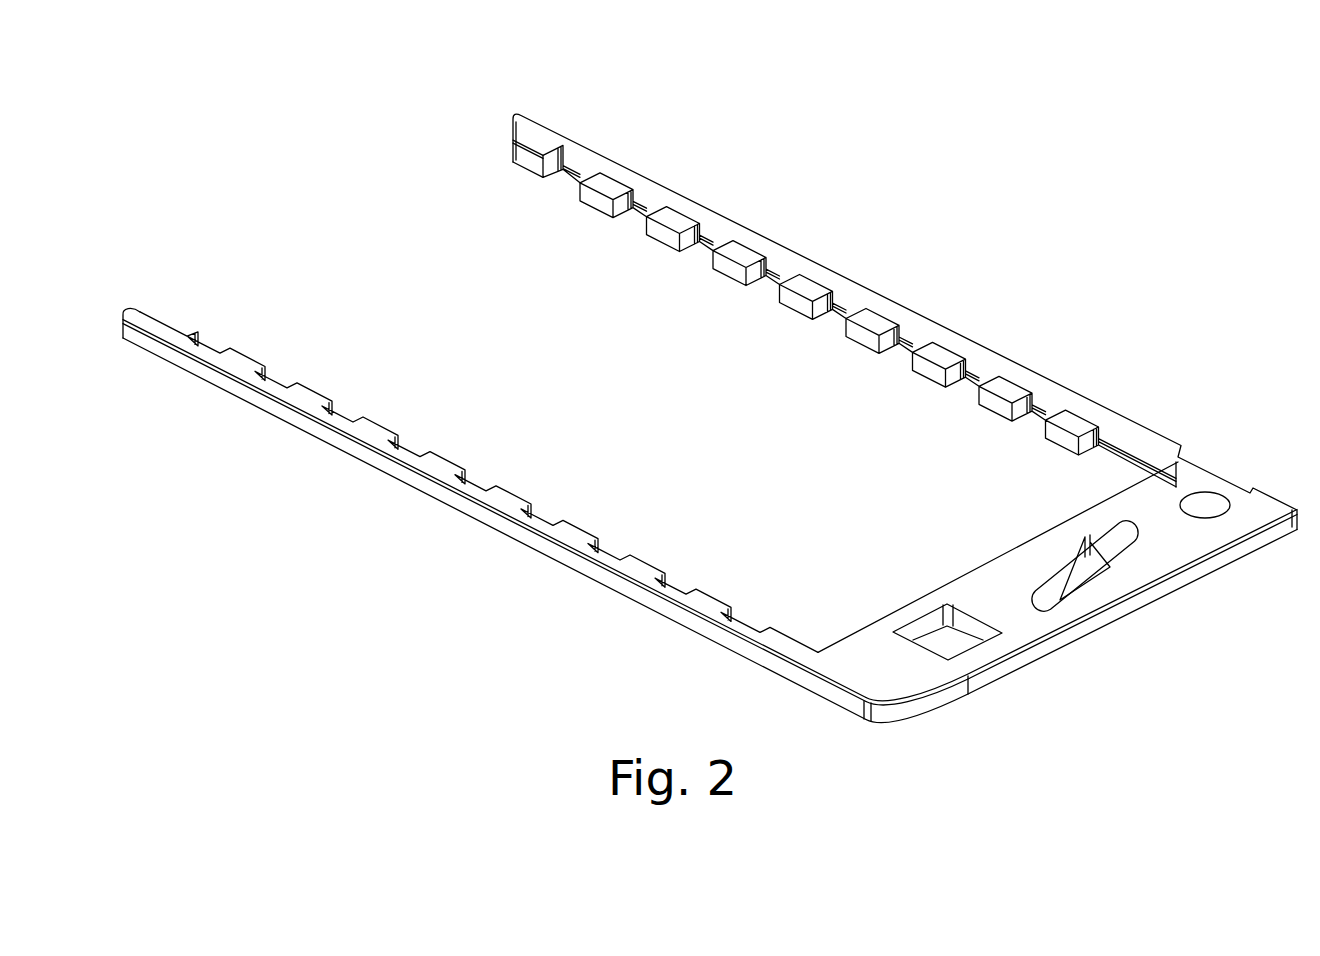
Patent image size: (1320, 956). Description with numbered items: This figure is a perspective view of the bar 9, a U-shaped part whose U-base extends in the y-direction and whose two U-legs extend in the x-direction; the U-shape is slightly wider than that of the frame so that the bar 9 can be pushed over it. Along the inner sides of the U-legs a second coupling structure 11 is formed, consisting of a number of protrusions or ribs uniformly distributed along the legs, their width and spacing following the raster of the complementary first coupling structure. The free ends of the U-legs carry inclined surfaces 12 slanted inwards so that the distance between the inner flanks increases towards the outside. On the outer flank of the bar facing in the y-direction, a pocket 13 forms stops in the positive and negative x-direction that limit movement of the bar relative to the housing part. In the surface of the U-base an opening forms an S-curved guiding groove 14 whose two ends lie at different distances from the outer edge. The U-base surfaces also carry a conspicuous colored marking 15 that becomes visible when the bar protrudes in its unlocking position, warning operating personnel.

The bar 9 is at (1100, 317).
The second coupling structure 11 is at (593, 210).
The inclined surfaces 12 is at (513, 137).
The pocket 13 is at (1217, 478).
The guiding groove 14 is at (1088, 568).
The colored marking 15 is at (1190, 547).